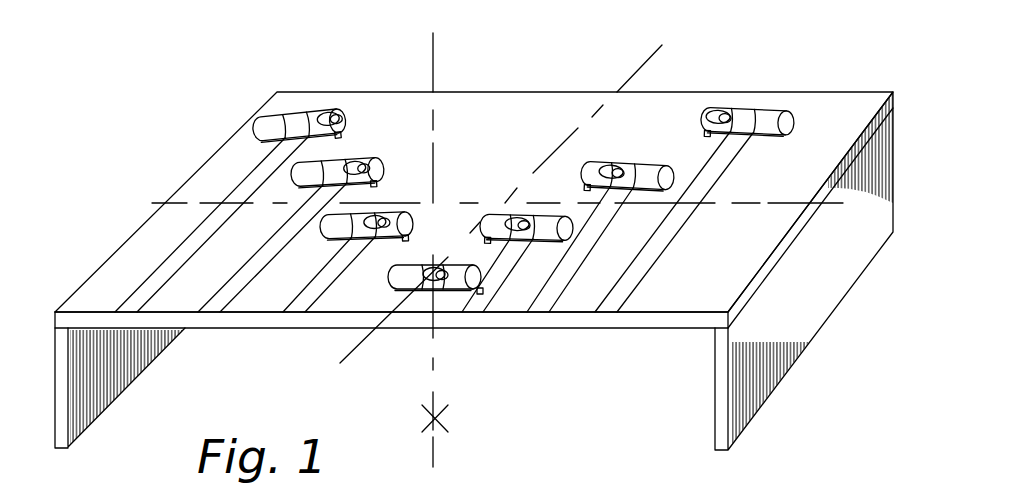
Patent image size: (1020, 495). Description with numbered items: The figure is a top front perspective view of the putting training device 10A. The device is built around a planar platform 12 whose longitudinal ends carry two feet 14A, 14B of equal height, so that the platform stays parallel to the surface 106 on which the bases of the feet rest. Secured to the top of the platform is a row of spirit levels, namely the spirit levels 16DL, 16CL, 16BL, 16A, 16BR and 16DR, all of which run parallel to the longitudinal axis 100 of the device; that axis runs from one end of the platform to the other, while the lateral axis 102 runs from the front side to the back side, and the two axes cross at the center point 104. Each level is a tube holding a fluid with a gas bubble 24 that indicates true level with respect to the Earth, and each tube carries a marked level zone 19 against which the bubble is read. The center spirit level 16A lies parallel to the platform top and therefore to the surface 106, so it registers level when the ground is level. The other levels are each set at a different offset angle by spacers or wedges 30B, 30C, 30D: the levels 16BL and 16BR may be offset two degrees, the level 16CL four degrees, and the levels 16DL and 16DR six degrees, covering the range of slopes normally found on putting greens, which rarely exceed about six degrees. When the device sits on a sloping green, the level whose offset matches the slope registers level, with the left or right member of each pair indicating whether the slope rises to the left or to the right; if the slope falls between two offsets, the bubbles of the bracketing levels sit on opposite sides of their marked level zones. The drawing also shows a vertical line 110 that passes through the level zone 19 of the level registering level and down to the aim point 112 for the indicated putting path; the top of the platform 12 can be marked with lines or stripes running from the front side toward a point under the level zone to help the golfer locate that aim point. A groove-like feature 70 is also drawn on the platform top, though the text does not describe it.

The putting training device 10A is at (225, 60).
The planar platform 12 is at (110, 268).
The foot 14A is at (117, 382).
The foot 14B is at (773, 382).
The center spirit level 16A is at (458, 286).
The spirit level 16BL is at (327, 230).
The spirit level 16BR is at (557, 230).
The spirit level 16CL is at (290, 175).
The spirit level 16DL is at (263, 124).
The spirit level 16DR is at (770, 124).
The marked level zone 19 is at (296, 118).
The gas bubble 24 is at (512, 223).
The spacer or wedge 30B is at (478, 237).
The spacer or wedge 30C is at (371, 183).
The spacer or wedge 30D is at (340, 136).
The groove 70 is at (302, 308).
The longitudinal axis 100 is at (747, 205).
The lateral axis 102 is at (634, 72).
The center point 104 is at (504, 203).
The surface 106 is at (585, 423).
The vertical line 110 is at (436, 55).
The aim point 112 is at (430, 418).